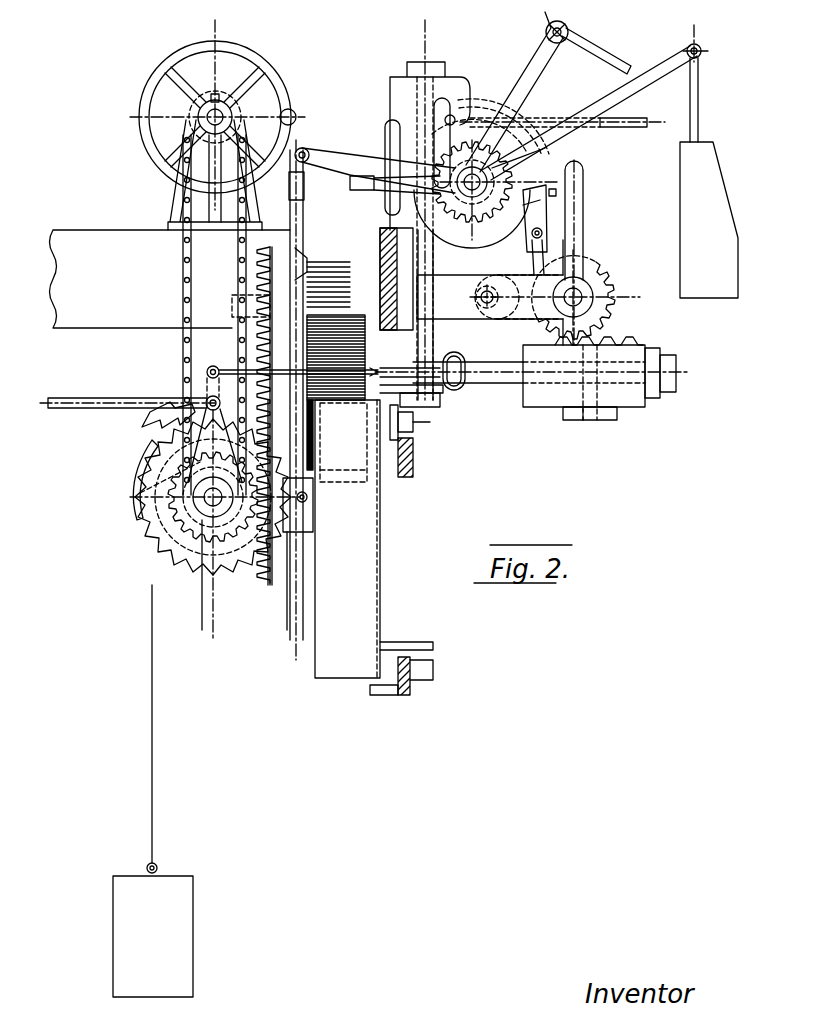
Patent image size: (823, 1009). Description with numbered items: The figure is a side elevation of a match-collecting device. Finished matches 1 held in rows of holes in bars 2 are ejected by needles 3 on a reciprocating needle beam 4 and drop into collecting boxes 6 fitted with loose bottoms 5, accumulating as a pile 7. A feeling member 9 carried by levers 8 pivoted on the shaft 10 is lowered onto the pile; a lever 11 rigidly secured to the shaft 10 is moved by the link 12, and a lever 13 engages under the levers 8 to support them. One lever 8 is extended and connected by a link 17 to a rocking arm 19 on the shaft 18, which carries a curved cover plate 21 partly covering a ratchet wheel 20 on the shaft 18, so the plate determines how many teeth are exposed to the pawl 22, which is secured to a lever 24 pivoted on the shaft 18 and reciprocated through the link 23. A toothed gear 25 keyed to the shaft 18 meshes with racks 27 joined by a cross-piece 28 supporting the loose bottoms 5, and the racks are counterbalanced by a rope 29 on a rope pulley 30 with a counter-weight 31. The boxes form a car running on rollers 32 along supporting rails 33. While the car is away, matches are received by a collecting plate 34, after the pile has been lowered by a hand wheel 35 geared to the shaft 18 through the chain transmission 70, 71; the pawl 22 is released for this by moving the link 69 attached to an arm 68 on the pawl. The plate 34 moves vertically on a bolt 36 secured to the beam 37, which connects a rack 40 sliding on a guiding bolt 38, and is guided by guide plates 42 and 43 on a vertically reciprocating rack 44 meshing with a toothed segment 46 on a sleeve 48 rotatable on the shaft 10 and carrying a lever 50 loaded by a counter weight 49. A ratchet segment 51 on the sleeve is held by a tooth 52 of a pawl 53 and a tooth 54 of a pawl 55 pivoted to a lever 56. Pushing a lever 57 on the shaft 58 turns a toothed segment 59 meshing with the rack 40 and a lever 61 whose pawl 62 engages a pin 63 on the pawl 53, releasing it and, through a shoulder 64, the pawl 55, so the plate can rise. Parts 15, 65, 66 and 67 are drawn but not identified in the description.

The finished matches 1 is at (333, 270).
The bars 2 is at (293, 213).
The needles 3 is at (300, 266).
The reciprocating needle beam 4 is at (232, 307).
The loose bottoms 5 is at (352, 481).
The collecting boxes 6 is at (322, 652).
The pile of finished matches 7 is at (371, 350).
The levers 8 is at (340, 157).
The feeling or measuring member 9 is at (393, 285).
The shaft 10 is at (578, 170).
The lever 11 is at (543, 72).
The link 12 is at (592, 46).
The lever 13 is at (437, 196).
The fork 15 is at (350, 188).
The link 17 is at (309, 187).
The shaft 18 is at (212, 507).
The rocking arm 19 is at (153, 533).
The ratchet wheel 20 is at (158, 553).
The curved cover plate 21 is at (150, 474).
The pawl 22 is at (160, 420).
The link 23 is at (77, 409).
The lever 24 is at (208, 405).
The toothed gear 25 is at (252, 568).
The racks 27 is at (258, 270).
The cross-piece 28 is at (311, 526).
The rope 29 is at (155, 777).
The rope pulley 30 is at (140, 493).
The counter-weight 31 is at (193, 947).
The rollers 32 is at (413, 423).
The supporting rails 33 is at (412, 458).
The collecting plate 34 is at (512, 390).
The hand wheel 35 is at (225, 43).
The bolt 36 is at (583, 392).
The beam 37 is at (605, 418).
The guiding bolt 38 is at (483, 363).
The rack 40 is at (622, 342).
The guide plate 42 is at (440, 403).
The guide plate 43 is at (392, 385).
The rack 44 is at (462, 248).
The toothed segment 46 is at (471, 228).
The sleeve 48 is at (487, 212).
The counter weight 49 is at (713, 176).
The lever 50 is at (660, 66).
The ratchet segment 51 is at (468, 132).
The tooth 52 is at (524, 128).
The pawl 53 is at (484, 127).
The tooth 54 is at (545, 150).
The pawl 55 is at (546, 190).
The lever 56 is at (460, 130).
The lever 57 is at (583, 254).
The shaft 58 is at (592, 295).
The toothed segment 59 is at (631, 300).
The lever 61 is at (523, 308).
The pawl 62 is at (505, 255).
The pin 63 is at (542, 234).
The shoulder 64 is at (556, 196).
The rod 65 is at (645, 120).
The pivot 66 is at (537, 239).
The pawl 67 is at (523, 205).
The arm 68 is at (207, 370).
The link 69 is at (366, 395).
The chain transmission 70 is at (217, 140).
The chain transmission 71 is at (186, 291).